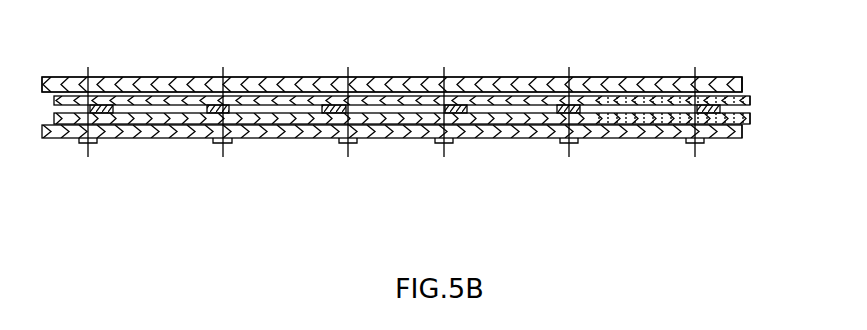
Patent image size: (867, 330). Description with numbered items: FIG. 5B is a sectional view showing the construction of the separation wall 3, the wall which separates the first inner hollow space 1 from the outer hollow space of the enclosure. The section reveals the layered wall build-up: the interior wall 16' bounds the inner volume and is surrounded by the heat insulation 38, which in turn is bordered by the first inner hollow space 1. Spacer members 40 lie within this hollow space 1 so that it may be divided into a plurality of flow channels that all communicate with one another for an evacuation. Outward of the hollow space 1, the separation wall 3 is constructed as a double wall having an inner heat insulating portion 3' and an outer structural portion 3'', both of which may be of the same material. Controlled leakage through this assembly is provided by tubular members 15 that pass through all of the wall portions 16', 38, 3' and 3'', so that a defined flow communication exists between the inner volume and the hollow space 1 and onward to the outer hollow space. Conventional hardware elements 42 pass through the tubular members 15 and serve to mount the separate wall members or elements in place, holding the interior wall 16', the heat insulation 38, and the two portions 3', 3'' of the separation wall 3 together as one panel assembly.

The first inner hollow space 1 is at (737, 113).
The separation wall 3 is at (758, 121).
The inner heat insulating portion 3' is at (402, 153).
The outer structural portion 3'' is at (392, 159).
The tubular member 15 is at (349, 146).
The interior wall 16' is at (392, 64).
The heat insulation 38 is at (748, 95).
The spacer member 40 is at (620, 77).
The hardware element 42 is at (227, 68).